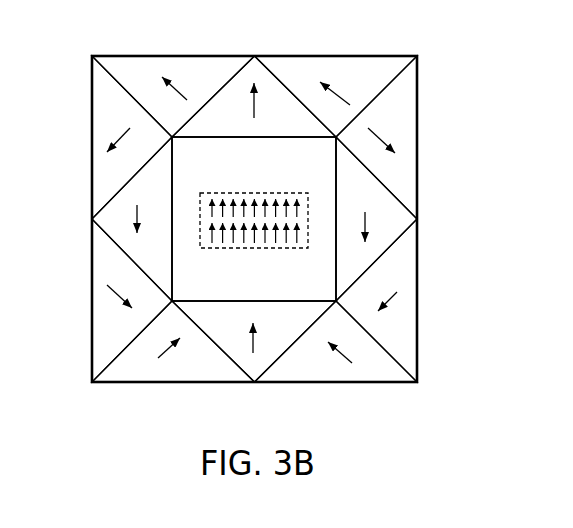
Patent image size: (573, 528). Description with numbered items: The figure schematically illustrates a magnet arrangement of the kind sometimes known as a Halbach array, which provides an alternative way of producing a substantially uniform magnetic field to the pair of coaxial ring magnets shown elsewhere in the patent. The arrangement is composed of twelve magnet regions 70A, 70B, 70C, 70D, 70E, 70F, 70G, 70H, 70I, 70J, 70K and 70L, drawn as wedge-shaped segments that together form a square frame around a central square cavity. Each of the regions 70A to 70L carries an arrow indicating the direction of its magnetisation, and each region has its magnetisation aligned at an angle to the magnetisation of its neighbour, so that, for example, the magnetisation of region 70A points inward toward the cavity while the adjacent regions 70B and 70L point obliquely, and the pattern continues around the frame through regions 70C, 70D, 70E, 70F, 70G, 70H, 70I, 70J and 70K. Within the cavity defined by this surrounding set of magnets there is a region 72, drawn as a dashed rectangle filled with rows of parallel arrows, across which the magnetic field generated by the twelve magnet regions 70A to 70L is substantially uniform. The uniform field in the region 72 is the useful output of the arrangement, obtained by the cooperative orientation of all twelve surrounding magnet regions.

The magnet region 70A is at (257, 70).
The magnet region 70B is at (375, 67).
The magnet region 70C is at (403, 105).
The magnet region 70D is at (395, 213).
The magnet region 70E is at (403, 330).
The magnet region 70F is at (367, 370).
The magnet region 70G is at (247, 360).
The magnet region 70H is at (133, 370).
The magnet region 70I is at (98, 327).
The magnet region 70J is at (113, 218).
The magnet region 70K is at (102, 110).
The magnet region 70L is at (155, 62).
The region of substantially uniform magnetic field 72 is at (237, 248).